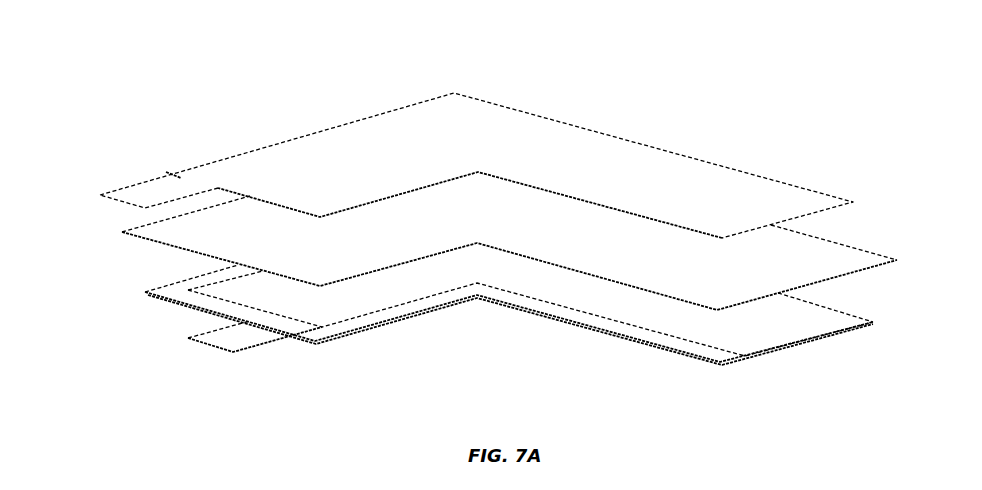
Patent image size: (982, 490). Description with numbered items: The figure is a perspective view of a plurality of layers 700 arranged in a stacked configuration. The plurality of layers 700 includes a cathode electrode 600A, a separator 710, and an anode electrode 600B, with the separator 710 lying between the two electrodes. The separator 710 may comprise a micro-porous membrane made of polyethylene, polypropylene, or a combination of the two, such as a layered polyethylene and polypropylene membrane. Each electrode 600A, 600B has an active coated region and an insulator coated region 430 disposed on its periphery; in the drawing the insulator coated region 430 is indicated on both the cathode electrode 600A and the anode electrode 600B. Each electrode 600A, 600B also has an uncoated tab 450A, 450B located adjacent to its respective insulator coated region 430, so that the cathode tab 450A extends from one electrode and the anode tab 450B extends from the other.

The plurality of layers 700 is at (49, 33).
The cathode electrode 600A is at (222, 157).
The anode electrode 600B is at (146, 292).
The uncoated tab 450A is at (142, 184).
The uncoated tab 450B is at (190, 338).
The insulator coated region 430 is at (725, 240).
The separator 710 is at (122, 232).